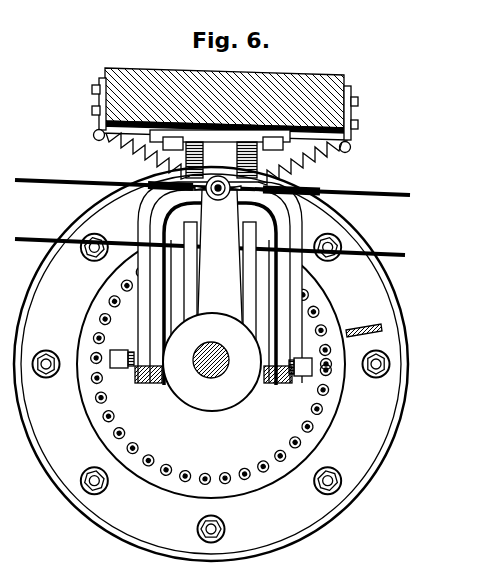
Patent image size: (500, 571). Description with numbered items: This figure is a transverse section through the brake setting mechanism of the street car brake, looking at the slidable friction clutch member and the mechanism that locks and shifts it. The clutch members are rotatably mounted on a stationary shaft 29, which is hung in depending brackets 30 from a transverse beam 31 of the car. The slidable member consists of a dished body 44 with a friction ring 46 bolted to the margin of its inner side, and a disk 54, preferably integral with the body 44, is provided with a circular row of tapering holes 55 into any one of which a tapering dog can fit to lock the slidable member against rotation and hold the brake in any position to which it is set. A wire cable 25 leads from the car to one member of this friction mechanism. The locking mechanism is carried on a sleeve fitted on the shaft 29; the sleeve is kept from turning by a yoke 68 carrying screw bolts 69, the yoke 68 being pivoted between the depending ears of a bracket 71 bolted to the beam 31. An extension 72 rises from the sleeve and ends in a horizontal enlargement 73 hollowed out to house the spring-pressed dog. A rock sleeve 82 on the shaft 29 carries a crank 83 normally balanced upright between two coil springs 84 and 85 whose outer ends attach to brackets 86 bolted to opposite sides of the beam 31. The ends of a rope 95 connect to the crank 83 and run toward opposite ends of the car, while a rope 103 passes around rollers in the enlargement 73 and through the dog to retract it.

The wire cable 25 is at (356, 329).
The stationary shaft 29 is at (229, 361).
The depending brackets 30 is at (160, 158).
The transverse beam 31 is at (330, 76).
The dished body 44 is at (211, 385).
The friction ring 46 is at (37, 444).
The disk 54 is at (211, 364).
The tapering holes 55 is at (126, 430).
The yoke 68 is at (141, 326).
The screw bolts 69 is at (120, 368).
The bracket 71 is at (302, 163).
The extension 72 is at (187, 284).
The horizontal enlargement 73 is at (187, 231).
The rock sleeve 82 is at (212, 362).
The crank 83 is at (220, 267).
The coil spring 84 is at (330, 151).
The coil spring 85 is at (116, 147).
The brackets 86 is at (98, 119).
The rope 95 is at (34, 179).
The rope 103 is at (42, 238).